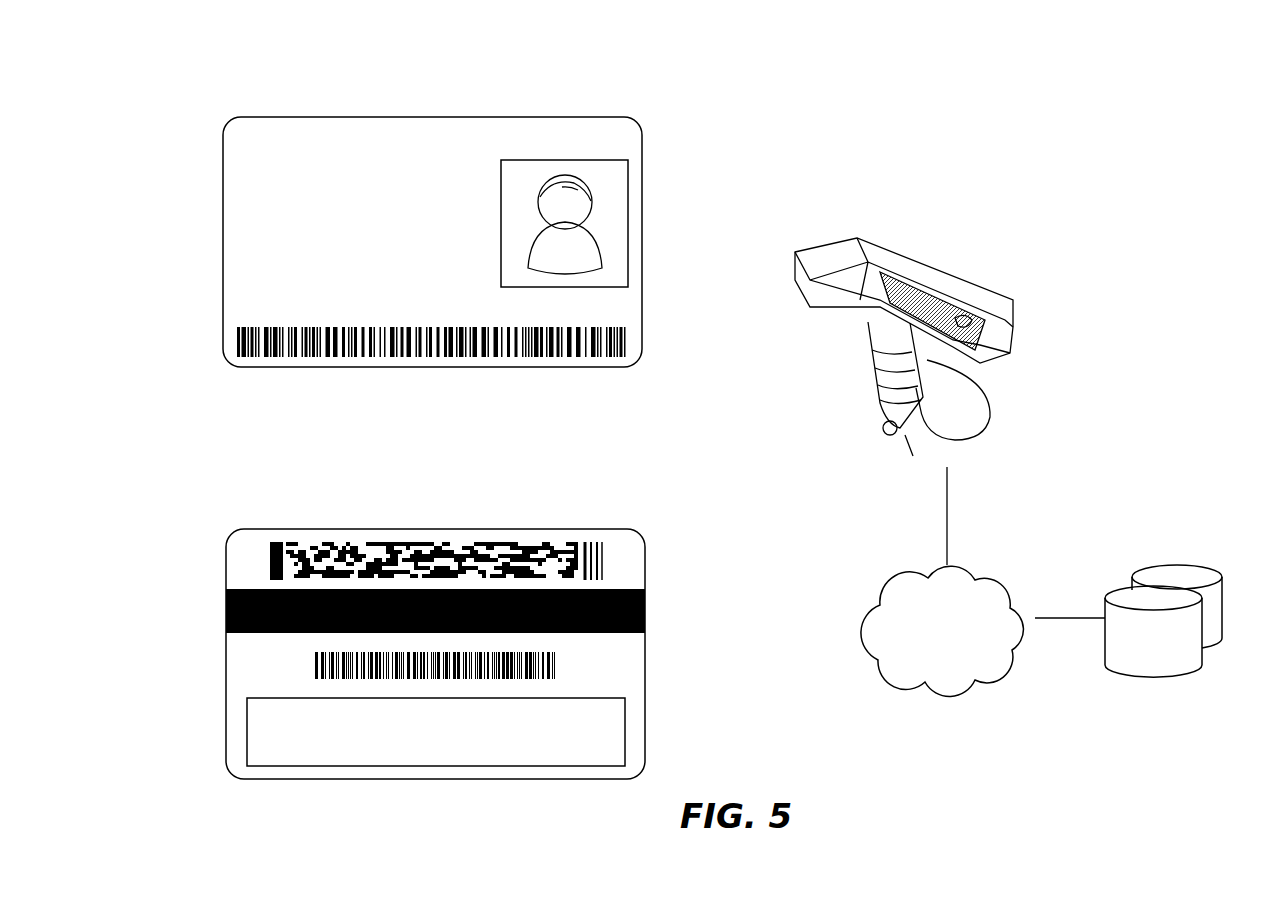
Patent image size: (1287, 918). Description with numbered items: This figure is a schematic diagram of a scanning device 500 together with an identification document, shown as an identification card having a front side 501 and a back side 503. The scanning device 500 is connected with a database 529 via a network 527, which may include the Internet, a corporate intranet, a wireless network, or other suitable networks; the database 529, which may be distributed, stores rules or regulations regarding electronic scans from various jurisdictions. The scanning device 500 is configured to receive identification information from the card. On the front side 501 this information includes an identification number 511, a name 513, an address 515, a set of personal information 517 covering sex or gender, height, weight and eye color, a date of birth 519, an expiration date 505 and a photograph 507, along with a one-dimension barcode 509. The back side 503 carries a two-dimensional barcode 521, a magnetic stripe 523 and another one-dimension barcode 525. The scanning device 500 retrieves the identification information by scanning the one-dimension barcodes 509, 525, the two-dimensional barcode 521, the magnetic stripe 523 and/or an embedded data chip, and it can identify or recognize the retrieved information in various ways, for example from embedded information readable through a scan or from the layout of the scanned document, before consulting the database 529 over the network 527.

The scanning device 500 is at (992, 266).
The front side 501 is at (624, 99).
The back side 503 is at (660, 543).
The expiration date 505 is at (630, 132).
The photograph 507 is at (630, 210).
The one-dimension barcode 509 is at (628, 340).
The identification number 511 is at (223, 130).
The name 513 is at (223, 170).
The address 515 is at (223, 197).
The set of personal information 517 is at (223, 265).
The date of birth 519 is at (223, 310).
The two-dimensional barcode 521 is at (283, 543).
The magnetic stripe 523 is at (233, 608).
The one-dimension barcode 525 is at (360, 665).
The network 527 is at (983, 631).
The database 529 is at (1170, 608).